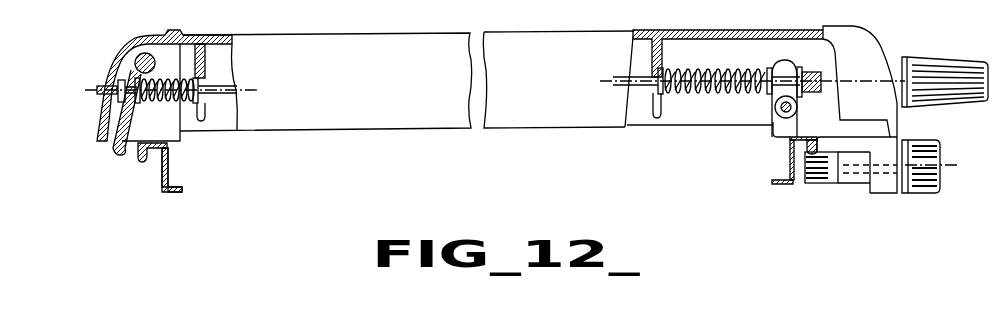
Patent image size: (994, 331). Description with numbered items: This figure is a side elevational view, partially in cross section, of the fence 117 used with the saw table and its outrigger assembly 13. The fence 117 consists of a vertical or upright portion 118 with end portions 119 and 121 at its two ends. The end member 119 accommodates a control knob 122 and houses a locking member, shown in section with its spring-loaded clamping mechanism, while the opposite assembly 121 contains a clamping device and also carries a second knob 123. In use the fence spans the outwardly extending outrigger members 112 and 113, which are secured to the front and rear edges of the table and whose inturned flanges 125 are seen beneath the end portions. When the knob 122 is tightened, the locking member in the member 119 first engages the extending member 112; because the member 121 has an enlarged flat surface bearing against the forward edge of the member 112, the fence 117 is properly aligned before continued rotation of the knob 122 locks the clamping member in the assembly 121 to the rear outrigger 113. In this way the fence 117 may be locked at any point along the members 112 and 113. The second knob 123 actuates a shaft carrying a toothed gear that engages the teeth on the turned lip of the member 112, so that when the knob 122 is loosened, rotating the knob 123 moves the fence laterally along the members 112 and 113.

The outrigger assembly 13 is at (163, 203).
The outwardly extending member 112 is at (796, 182).
The outwardly extending member 113 is at (162, 186).
The fence 117 is at (613, 22).
The upright portion 118 is at (525, 47).
The end portion 119 is at (888, 125).
The end portion 121 is at (113, 57).
The control knob 122 is at (945, 58).
The second knob 123 is at (920, 192).
The inturned flange 125 is at (177, 193).